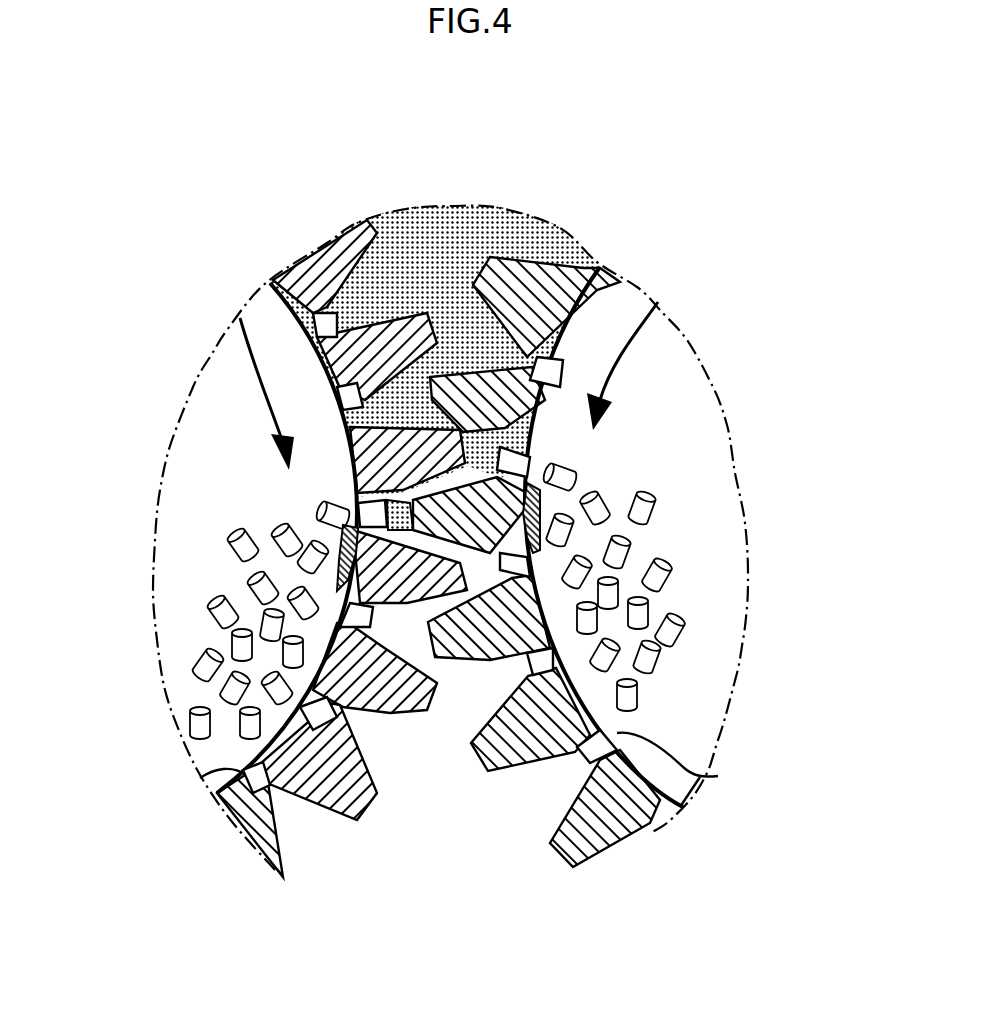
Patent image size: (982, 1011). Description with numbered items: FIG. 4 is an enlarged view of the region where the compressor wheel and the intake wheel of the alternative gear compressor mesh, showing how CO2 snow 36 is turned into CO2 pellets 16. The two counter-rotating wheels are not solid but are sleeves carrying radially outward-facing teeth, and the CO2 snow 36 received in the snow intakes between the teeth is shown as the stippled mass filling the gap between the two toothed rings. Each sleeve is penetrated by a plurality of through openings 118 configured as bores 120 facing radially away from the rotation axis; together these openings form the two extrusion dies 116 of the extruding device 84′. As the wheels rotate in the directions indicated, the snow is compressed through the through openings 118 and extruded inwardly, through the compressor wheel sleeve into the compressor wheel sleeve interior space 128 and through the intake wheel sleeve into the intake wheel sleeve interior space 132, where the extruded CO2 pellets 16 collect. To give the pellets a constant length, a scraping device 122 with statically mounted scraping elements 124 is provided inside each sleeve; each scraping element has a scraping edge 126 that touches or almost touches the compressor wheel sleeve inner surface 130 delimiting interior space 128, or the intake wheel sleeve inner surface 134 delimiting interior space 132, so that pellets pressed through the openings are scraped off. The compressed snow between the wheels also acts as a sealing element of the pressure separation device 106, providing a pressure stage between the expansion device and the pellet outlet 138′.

The CO2 pellets 16 is at (243, 648).
The CO2 snow 36 is at (430, 240).
The extruding device 84′ is at (612, 488).
The pressure separation device 106 is at (323, 423).
The extrusion dies 116 is at (307, 363).
The through openings 118 is at (540, 370).
The bores 120 is at (594, 290).
The scraping device 122 is at (335, 574).
The scraping elements 124 is at (338, 570).
The scraping edge 126 is at (356, 517).
The compressor wheel sleeve interior space 128 is at (233, 533).
The compressor wheel sleeve inner surface 130 is at (248, 304).
The intake wheel sleeve interior space 132 is at (713, 717).
The intake wheel sleeve inner surface 134 is at (590, 292).
The pellet outlet 138′ is at (533, 460).